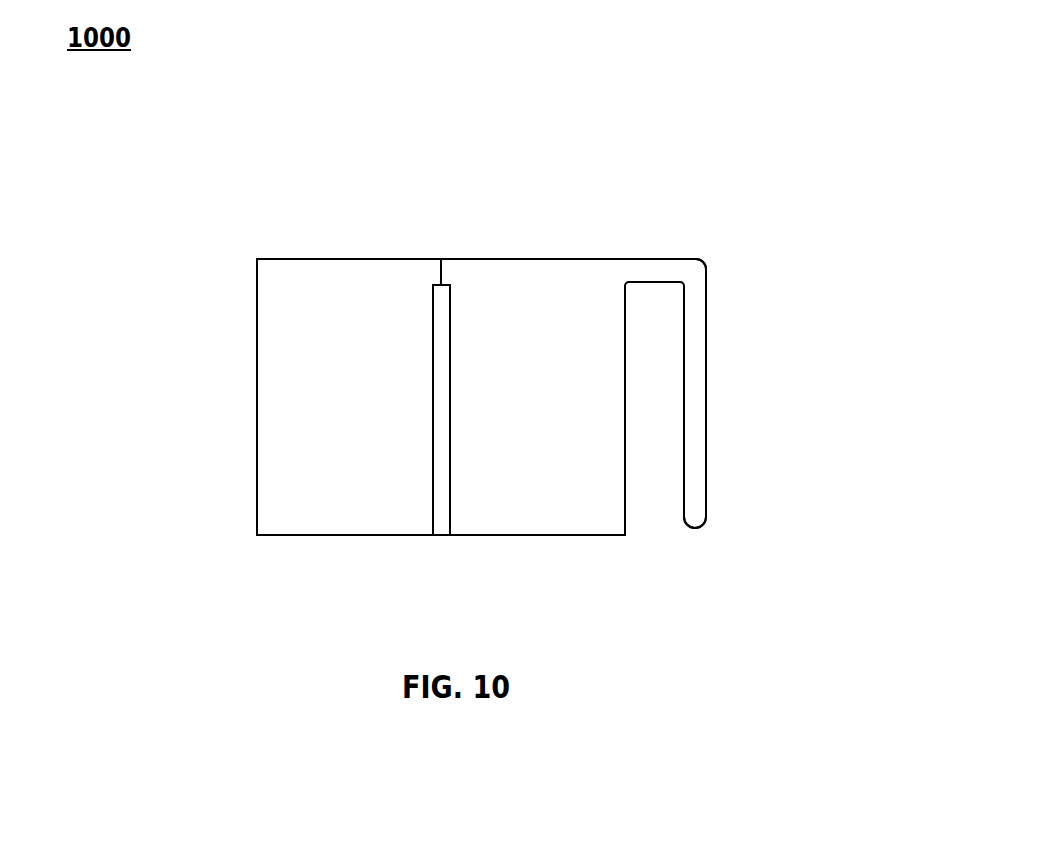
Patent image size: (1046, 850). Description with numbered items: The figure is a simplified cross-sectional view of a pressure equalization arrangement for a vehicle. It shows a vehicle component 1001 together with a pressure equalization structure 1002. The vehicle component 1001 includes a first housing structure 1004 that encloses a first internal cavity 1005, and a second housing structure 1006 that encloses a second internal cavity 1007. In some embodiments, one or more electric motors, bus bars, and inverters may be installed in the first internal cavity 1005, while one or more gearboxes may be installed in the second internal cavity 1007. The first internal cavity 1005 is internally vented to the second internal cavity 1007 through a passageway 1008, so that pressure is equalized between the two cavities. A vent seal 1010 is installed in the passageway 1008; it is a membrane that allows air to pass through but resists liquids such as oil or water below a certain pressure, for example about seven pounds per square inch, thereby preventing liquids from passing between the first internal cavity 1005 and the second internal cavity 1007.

The vehicle component 1001 is at (443, 203).
The pressure equalization structure 1002 is at (708, 296).
The first housing structure 1004 is at (279, 258).
The first internal cavity 1005 is at (306, 355).
The second housing structure 1006 is at (600, 258).
The second internal cavity 1007 is at (494, 490).
The passageway 1008 is at (435, 272).
The vent seal 1010 is at (451, 270).